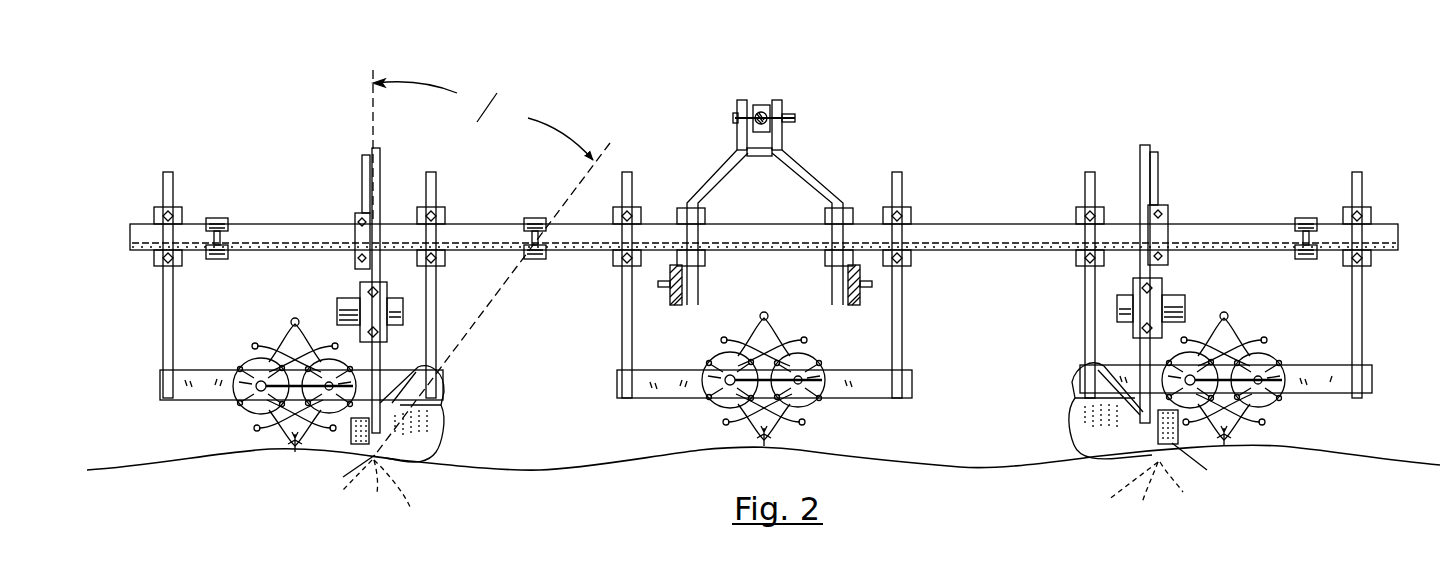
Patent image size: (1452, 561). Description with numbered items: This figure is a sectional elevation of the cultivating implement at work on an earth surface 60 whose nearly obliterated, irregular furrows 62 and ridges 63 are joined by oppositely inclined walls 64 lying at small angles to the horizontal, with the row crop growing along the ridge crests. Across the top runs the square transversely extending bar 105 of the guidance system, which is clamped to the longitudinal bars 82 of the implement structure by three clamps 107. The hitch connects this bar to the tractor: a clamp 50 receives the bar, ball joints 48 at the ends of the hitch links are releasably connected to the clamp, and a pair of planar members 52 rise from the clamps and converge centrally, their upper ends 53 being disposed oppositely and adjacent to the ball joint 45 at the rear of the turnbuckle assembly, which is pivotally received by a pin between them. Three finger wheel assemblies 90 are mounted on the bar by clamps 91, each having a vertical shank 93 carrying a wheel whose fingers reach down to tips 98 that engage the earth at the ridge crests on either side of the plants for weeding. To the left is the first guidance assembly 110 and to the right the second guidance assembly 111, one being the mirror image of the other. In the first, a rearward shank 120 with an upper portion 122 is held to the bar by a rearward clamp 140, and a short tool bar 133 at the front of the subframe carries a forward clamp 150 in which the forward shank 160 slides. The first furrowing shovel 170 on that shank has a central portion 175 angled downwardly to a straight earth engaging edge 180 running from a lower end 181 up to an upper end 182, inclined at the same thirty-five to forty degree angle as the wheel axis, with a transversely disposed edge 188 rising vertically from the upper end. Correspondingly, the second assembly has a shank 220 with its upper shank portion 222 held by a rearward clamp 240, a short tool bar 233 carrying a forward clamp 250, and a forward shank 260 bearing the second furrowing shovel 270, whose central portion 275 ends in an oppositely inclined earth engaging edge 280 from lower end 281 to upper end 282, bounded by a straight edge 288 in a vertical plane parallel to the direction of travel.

The ball joint 45 is at (760, 105).
The ball joints 48 is at (668, 292).
The clamp 50 is at (688, 205).
The planar members 52 is at (795, 175).
The upper ends 53 is at (738, 100).
The earth surface 60 is at (124, 462).
The furrows 62 is at (762, 443).
The ridges 63 is at (285, 445).
The inclined walls 64 is at (762, 440).
The longitudinal bars 82 is at (762, 236).
The finger wheel assemblies 90 is at (246, 322).
The clamps 91 is at (160, 212).
The vertical shank 93 is at (205, 370).
The tips 98 is at (805, 430).
The transversely extending bar 105 is at (762, 230).
The clamps 107 is at (220, 258).
The first guidance assembly 110 is at (419, 297).
The second guidance assembly 111 is at (1167, 312).
The shank 120 is at (336, 164).
The upper portion 122 is at (362, 175).
The short tool bar 133 is at (345, 298).
The rearward clamp 140 is at (356, 215).
The forward clamp 150 is at (391, 300).
The forward shank 160 is at (377, 148).
The first furrowing shovel 170 is at (418, 465).
The central portion 175 is at (346, 474).
The earth engaging edge 180 is at (382, 489).
The lower end 181 is at (409, 492).
The upper end 182 is at (343, 490).
The transversely disposed edge 188 is at (350, 440).
The shank 220 is at (1188, 152).
The shank 222 is at (1158, 165).
The short tool bar 233 is at (1180, 295).
The rearward clamp 240 is at (1165, 205).
The forward clamp 250 is at (1129, 294).
The forward shank 260 is at (1143, 145).
The second furrowing shovel 270 is at (1120, 467).
The central portion 275 is at (1200, 466).
The earth engaging edge 280 is at (1137, 493).
The lower end 281 is at (1111, 489).
The upper end 282 is at (1188, 488).
The straight edge 288 is at (1158, 432).